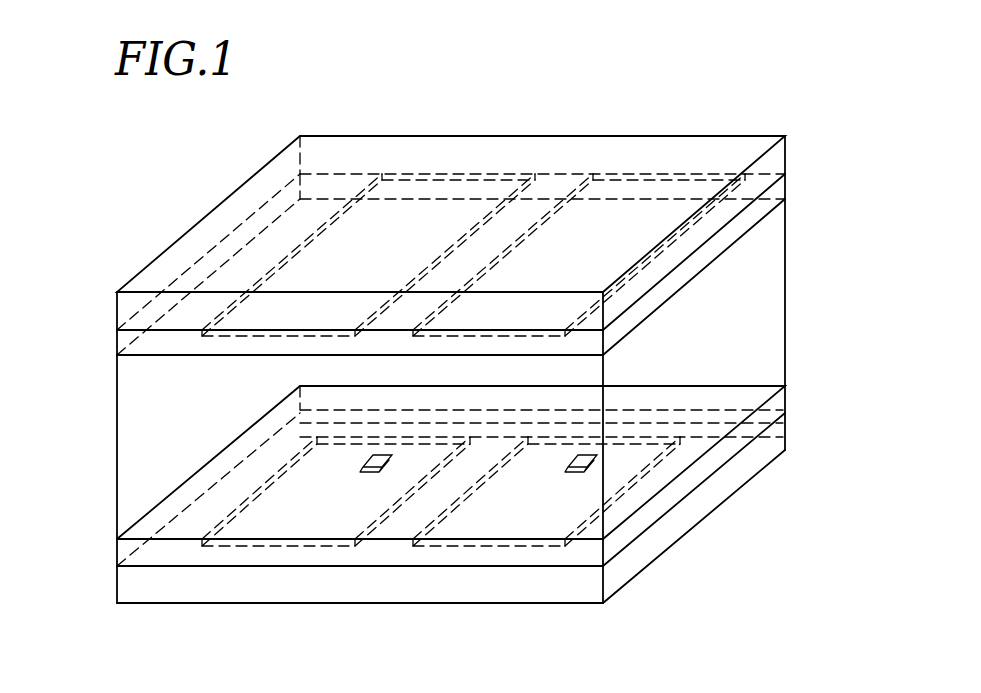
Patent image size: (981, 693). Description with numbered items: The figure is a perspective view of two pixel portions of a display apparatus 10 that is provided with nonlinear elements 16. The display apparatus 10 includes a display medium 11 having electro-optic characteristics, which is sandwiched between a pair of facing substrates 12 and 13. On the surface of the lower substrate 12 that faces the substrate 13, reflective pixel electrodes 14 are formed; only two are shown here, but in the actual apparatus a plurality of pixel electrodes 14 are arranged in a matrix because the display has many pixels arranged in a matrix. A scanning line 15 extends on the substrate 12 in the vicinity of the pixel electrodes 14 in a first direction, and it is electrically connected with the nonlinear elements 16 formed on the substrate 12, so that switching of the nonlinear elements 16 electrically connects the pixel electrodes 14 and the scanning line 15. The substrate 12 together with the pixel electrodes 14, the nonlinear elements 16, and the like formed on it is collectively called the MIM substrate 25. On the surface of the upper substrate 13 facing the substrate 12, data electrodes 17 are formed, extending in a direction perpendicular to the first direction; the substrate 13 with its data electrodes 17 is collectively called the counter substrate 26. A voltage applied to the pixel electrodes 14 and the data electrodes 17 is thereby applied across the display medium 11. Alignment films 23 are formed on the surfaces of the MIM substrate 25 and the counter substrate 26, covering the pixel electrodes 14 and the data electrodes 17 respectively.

The display apparatus 10 is at (729, 111).
The display medium 11 is at (142, 428).
The substrate 12 is at (548, 587).
The substrate 13 is at (513, 148).
The pixel electrodes 14 is at (478, 523).
The scanning line 15 is at (692, 430).
The nonlinear elements 16 is at (600, 468).
The data electrodes 17 is at (608, 218).
The alignment films 23 is at (763, 210).
The MIM substrate 25 is at (800, 410).
The counter substrate 26 is at (800, 137).